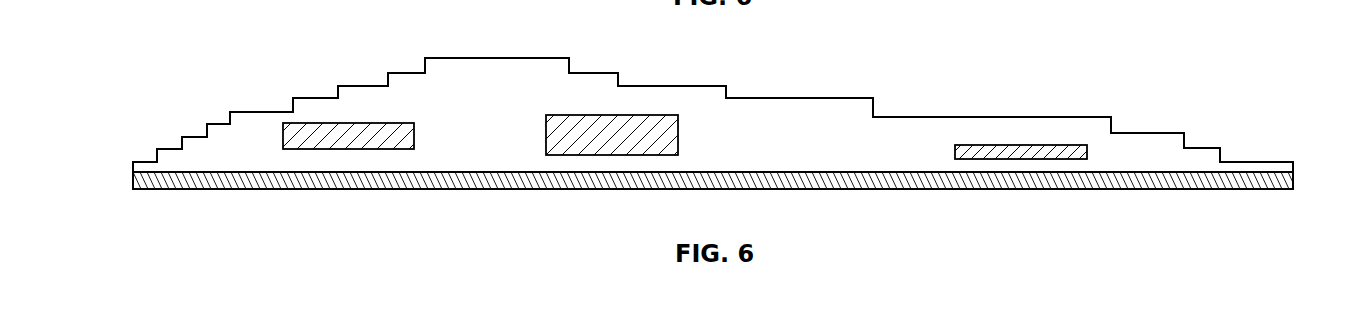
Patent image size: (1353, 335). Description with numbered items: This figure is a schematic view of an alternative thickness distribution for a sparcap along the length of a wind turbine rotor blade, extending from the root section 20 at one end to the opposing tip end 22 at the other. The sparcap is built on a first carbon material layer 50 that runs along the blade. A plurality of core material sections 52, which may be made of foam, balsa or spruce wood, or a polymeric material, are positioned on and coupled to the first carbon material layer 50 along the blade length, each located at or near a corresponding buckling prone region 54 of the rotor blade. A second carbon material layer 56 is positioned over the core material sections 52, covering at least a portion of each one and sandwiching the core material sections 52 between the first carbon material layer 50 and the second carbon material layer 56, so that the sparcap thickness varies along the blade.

The first carbon material layer 50 is at (925, 166).
The second carbon material layer 56 is at (476, 67).
The buckling prone region 54 is at (332, 199).
The core material section 52 is at (322, 132).
The root section 20 is at (126, 182).
The tip end 22 is at (1300, 181).